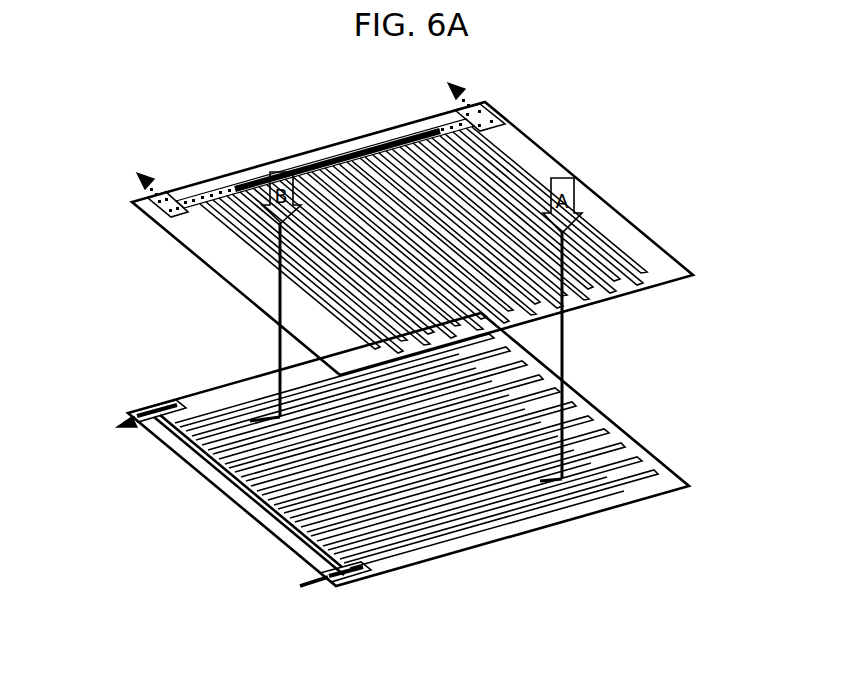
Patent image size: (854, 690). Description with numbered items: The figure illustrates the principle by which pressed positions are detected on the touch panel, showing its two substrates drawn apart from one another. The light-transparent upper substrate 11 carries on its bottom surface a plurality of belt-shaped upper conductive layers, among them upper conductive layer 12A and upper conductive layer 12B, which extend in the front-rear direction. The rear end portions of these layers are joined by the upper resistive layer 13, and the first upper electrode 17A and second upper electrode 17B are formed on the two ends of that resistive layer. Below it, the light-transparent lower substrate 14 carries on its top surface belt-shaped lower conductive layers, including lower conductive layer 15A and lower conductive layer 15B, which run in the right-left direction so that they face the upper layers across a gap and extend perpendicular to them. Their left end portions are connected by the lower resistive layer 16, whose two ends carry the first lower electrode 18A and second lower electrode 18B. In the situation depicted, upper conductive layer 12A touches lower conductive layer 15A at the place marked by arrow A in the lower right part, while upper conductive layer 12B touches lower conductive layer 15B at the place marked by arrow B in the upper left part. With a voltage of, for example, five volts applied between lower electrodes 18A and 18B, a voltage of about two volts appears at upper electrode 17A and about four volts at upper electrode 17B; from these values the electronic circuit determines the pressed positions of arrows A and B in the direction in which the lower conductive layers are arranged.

The upper substrate 11 is at (622, 210).
The upper conductive layer 12A is at (598, 268).
The upper conductive layer 12B is at (330, 273).
The upper resistive layer 13 is at (337, 157).
The lower substrate 14 is at (643, 503).
The lower conductive layer 15A is at (613, 463).
The lower conductive layer 15B is at (500, 355).
The lower resistive layer 16 is at (252, 493).
The first upper electrode 17A is at (493, 123).
The second upper electrode 17B is at (150, 210).
The first lower electrode 18A is at (365, 568).
The second lower electrode 18B is at (152, 428).